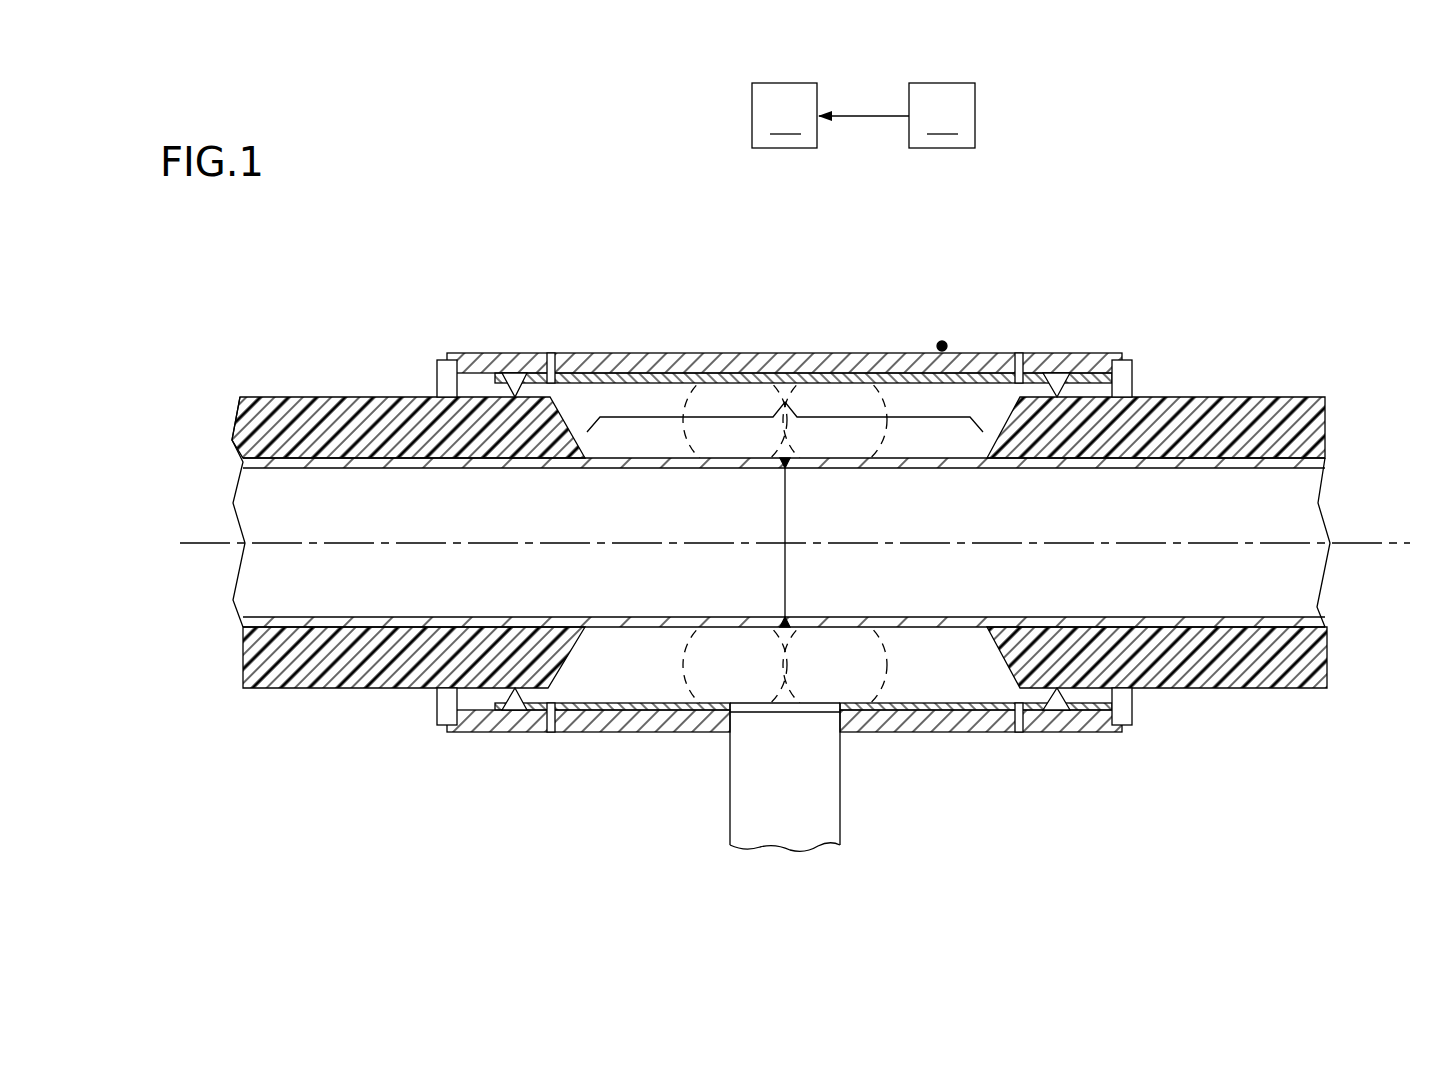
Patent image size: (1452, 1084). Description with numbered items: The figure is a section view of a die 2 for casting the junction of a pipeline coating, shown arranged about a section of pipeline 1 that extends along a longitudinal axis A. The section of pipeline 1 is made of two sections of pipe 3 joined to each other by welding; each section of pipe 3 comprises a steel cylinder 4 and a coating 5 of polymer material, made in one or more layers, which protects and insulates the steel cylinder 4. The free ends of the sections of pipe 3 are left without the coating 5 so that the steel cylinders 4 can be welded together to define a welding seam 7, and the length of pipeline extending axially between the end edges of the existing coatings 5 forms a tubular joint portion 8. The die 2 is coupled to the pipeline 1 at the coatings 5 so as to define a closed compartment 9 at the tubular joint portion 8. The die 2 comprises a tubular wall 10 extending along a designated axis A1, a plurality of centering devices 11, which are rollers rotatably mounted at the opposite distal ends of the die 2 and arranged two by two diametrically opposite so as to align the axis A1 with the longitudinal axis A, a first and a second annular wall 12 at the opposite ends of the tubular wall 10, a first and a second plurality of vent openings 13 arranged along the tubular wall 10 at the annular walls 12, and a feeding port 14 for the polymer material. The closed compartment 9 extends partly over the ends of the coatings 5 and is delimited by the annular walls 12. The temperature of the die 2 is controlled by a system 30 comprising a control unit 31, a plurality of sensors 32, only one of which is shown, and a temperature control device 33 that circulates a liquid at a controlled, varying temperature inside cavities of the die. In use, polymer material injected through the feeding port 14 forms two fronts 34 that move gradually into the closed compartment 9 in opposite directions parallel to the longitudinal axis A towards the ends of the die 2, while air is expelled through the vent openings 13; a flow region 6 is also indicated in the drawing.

The section of pipeline 1 is at (1364, 445).
The die 2 is at (1146, 281).
The section of pipe 3 is at (292, 712).
The steel cylinder 4 is at (246, 462).
The coating 5 is at (345, 417).
The flow channel 6 is at (657, 630).
The welding seam 7 is at (785, 458).
The tubular joint portion 8 is at (948, 406).
The closed compartment 9 is at (713, 665).
The tubular wall 10 is at (808, 332).
The centering device 11 is at (445, 380).
The annular wall 12 is at (514, 380).
The vent opening 13 is at (551, 352).
The feeding port 14 is at (800, 702).
The system 30 is at (1050, 66).
The control unit 31 is at (942, 149).
The sensor 32 is at (937, 346).
The temperature control device 33 is at (785, 352).
The front 34 is at (685, 392).
The longitudinal axis A is at (1380, 543).
The axis A1 is at (200, 543).